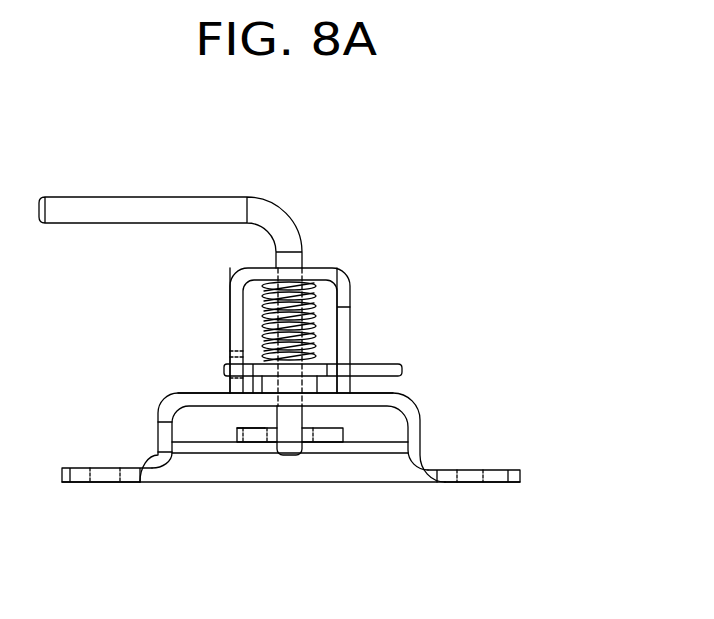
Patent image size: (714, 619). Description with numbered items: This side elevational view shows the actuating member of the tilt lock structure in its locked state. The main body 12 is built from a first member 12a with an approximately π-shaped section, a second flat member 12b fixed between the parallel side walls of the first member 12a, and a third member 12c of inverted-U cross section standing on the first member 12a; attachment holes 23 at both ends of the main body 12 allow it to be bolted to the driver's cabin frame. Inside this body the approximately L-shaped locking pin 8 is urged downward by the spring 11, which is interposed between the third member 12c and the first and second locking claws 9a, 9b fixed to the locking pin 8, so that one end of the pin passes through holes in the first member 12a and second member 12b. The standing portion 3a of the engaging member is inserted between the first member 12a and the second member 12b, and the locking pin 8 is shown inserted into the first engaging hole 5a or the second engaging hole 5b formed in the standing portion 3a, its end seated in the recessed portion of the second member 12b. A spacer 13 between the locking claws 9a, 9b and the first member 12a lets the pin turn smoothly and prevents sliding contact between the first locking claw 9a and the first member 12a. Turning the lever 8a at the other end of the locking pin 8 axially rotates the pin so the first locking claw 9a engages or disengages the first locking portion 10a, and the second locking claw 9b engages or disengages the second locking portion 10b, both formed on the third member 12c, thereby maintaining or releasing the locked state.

The lever 8a is at (128, 205).
The spring 11 is at (312, 281).
The third member 12c is at (238, 282).
The first locking portion 10a is at (345, 325).
The second locking portion 10b is at (232, 353).
The locking pin 8 is at (286, 434).
The first locking claw 9a is at (378, 362).
The second locking claw 9b is at (226, 367).
The first member 12a is at (412, 438).
The attachment holes 23 is at (100, 485).
The spacer 13 is at (278, 380).
The standing portion 3a is at (237, 428).
The first engaging hole 5a is at (313, 435).
The second engaging hole 5b is at (290, 435).
The second member 12b is at (357, 448).
The main body 12 is at (457, 503).